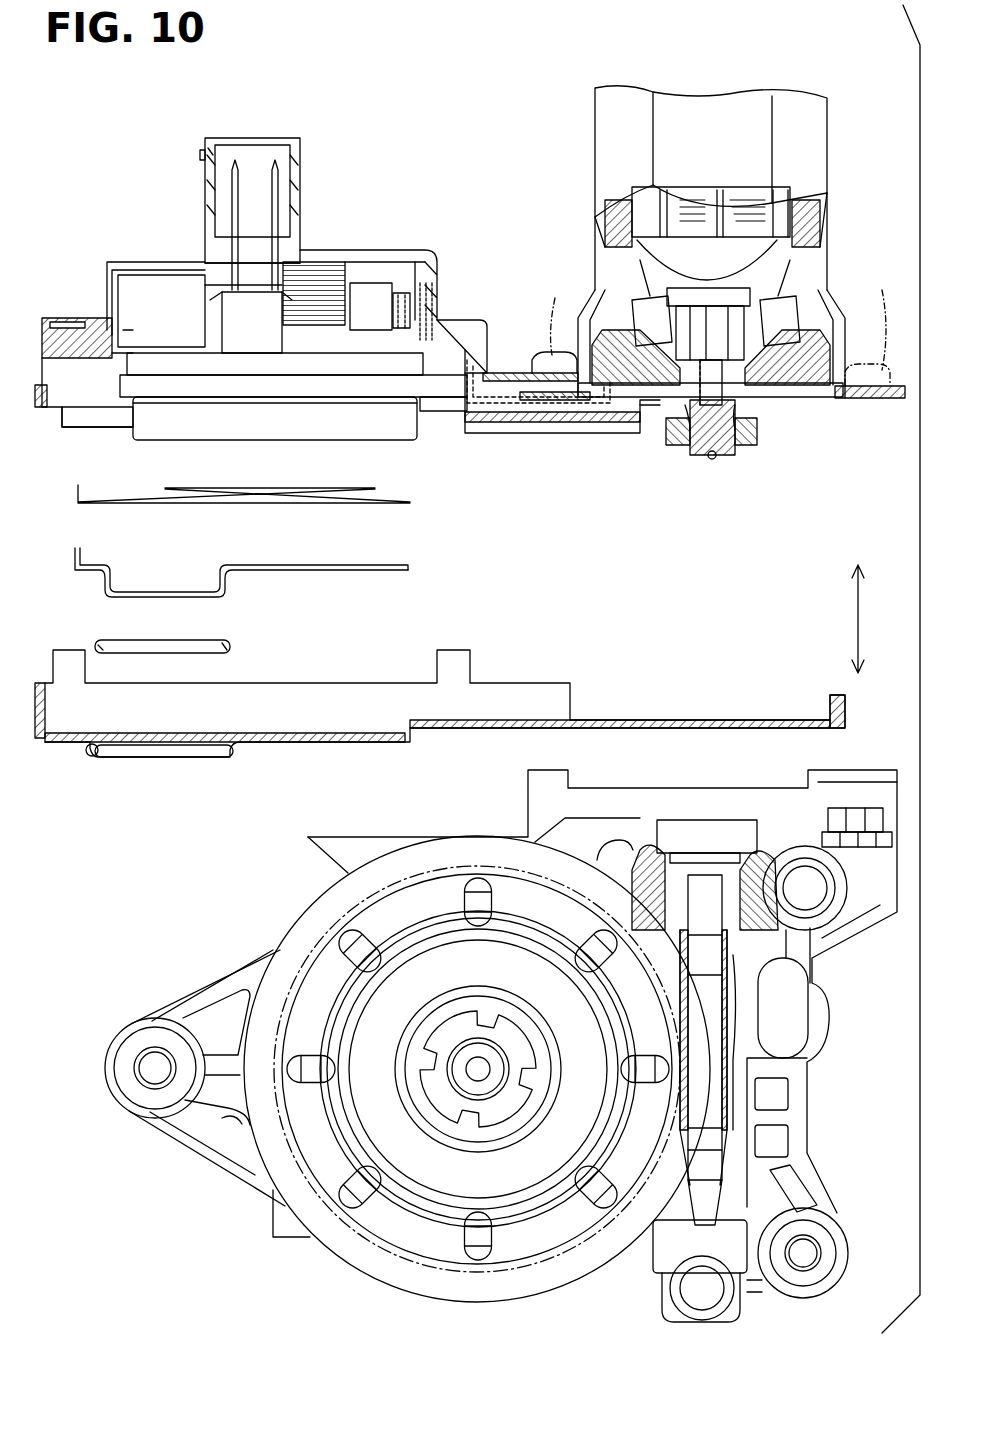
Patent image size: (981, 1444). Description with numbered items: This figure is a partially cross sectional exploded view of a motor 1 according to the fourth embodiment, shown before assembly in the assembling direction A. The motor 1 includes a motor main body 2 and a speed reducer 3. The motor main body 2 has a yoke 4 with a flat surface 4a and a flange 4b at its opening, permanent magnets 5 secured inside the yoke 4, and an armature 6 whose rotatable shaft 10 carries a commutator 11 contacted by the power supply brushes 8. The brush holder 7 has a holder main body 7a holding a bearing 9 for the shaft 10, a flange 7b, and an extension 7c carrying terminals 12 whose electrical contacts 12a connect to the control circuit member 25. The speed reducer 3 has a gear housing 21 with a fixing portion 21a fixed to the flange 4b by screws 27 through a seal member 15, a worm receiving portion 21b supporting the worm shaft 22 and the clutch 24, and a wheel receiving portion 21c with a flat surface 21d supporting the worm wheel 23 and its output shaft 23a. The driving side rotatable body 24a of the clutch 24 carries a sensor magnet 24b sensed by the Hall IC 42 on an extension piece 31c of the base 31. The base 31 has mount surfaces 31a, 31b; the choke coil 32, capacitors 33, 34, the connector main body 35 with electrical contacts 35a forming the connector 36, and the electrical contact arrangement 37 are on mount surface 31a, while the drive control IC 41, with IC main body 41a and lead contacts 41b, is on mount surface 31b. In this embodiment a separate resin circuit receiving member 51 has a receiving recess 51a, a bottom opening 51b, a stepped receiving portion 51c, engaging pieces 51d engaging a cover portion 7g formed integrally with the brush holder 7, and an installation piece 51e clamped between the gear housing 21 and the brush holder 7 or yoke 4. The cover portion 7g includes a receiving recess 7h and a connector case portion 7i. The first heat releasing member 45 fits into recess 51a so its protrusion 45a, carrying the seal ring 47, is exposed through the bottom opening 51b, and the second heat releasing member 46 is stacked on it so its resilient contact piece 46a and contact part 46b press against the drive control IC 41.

The motor 1 is at (109, 109).
The motor main body 2 is at (726, 171).
The speed reducer 3 is at (145, 1004).
The yoke housing 4 is at (818, 118).
The flat surface of the yoke 4a is at (698, 110).
The flange of the yoke 4b is at (540, 368).
The permanent magnets 5 is at (605, 215).
The armature 6 is at (688, 200).
The brush holder 7 is at (741, 377).
The holder main body 7a is at (830, 350).
The flange 7b is at (828, 402).
The extension 7c is at (548, 422).
The cover portion 7g is at (128, 265).
The receiving recess 7h is at (107, 300).
The connector case portion 7i is at (200, 145).
The power supply brushes 8 is at (652, 325).
The bearing 9 is at (735, 405).
The rotatable shaft 10 is at (740, 410).
The commutator 11 is at (706, 300).
The terminals 12 is at (578, 425).
The electrical contacts 12a is at (437, 266).
The seal member 15 is at (45, 410).
The gear housing 21 is at (604, 1027).
The fixing portion 21a is at (842, 772).
The worm receiving portion 21b is at (770, 1195).
The wheel receiving portion 21c is at (228, 1135).
The flat surface of the wheel receiving portion 21d is at (268, 1178).
The worm shaft 22 is at (730, 965).
The worm wheel 23 is at (477, 1069).
The output shaft 23a is at (480, 1058).
The clutch 24 is at (703, 822).
The driving side rotatable body 24a is at (718, 460).
The sensor magnet 24b is at (696, 450).
The control circuit member 25 is at (396, 264).
The screws 27 is at (722, 316).
The base 31 is at (299, 364).
The mount surface 31a is at (172, 365).
The mount surface 31b is at (210, 398).
The extension piece 31c is at (618, 430).
The choke coil 32 is at (320, 262).
The capacitor 33 is at (165, 285).
The capacitor 34 is at (372, 283).
The connector main body 35 is at (225, 292).
The electrical contacts 35a is at (255, 150).
The connector 36 is at (239, 171).
The electrical contact arrangement 37 is at (393, 318).
The drive control IC 41 is at (264, 441).
The IC main body 41a is at (265, 432).
The electrical lead contacts 41b is at (118, 430).
The Hall IC 42 is at (658, 415).
The first heat releasing member 45 is at (273, 587).
The embossed protrusion 45a is at (175, 600).
The second heat releasing member 46 is at (270, 502).
The resilient contact piece 46a is at (258, 503).
The contact part 46b is at (182, 488).
The seal ring 47 is at (232, 645).
The circuit receiving member 51 is at (438, 704).
The receiving recess 51a is at (47, 740).
The bottom opening 51b is at (105, 752).
The stepped receiving portion 51c is at (92, 758).
The engaging pieces 51d is at (70, 650).
The installation piece 51e is at (810, 718).
The assembling direction A is at (858, 628).